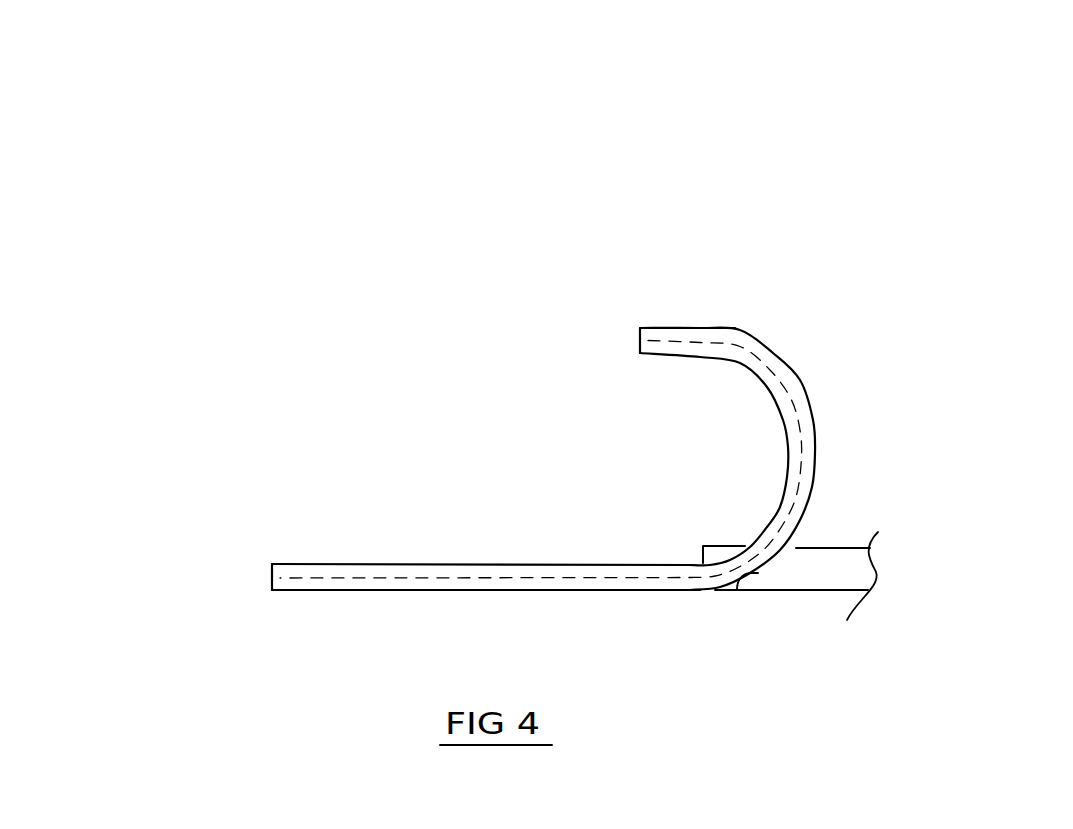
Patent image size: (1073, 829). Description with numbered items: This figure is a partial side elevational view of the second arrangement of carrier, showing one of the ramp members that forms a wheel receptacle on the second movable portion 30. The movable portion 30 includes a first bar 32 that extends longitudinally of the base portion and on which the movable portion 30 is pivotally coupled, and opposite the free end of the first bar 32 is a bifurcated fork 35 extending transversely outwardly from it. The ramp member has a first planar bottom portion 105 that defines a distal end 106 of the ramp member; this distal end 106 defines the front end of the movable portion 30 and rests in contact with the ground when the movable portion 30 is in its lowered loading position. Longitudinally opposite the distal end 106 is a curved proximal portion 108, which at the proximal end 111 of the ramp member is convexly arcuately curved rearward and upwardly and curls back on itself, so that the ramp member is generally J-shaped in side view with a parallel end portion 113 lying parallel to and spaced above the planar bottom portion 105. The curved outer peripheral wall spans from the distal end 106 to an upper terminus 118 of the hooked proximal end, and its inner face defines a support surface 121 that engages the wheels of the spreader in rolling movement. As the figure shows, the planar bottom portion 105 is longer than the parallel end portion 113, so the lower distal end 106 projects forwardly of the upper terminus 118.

The second movable portion 30 is at (612, 392).
The first bar 32 is at (810, 590).
The bifurcated fork 35 is at (743, 590).
The planar bottom portion 105 is at (427, 562).
The distal end 106 is at (270, 578).
The curved proximal portion 108 is at (581, 416).
The proximal end 111 is at (820, 450).
The parallel end portion 113 is at (698, 326).
The upper terminus 118 is at (637, 338).
The support surface 121 is at (505, 575).